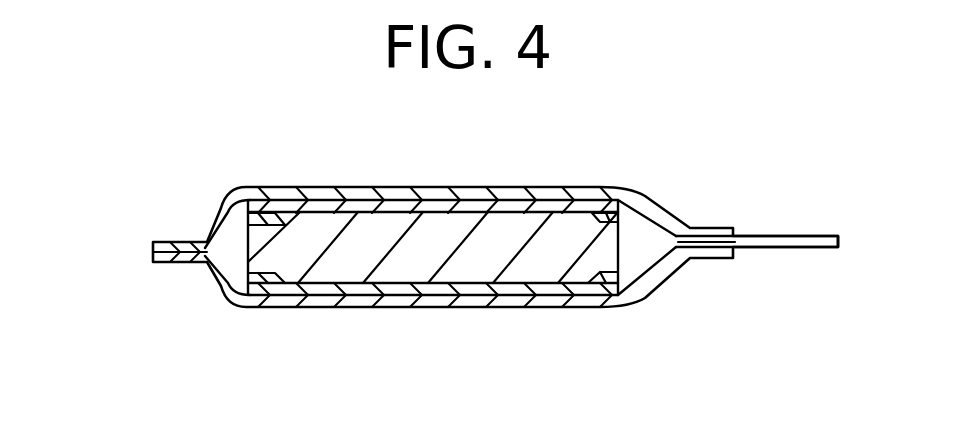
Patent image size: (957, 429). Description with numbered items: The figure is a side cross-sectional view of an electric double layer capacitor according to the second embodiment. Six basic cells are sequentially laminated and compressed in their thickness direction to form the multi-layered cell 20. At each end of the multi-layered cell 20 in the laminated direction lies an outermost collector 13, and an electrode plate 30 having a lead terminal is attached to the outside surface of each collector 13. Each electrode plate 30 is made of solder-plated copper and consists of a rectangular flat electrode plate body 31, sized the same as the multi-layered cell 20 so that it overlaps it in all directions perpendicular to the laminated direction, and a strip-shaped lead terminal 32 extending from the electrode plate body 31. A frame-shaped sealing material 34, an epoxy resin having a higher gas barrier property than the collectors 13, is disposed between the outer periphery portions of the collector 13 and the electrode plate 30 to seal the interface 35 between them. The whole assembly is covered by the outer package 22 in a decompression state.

The collector 13 is at (428, 205).
The multi-layered cell 20 is at (474, 198).
The outer package 22 is at (645, 188).
The electrode plate having a lead terminal 30 is at (347, 197).
The electrode plate body 31 is at (525, 197).
The lead terminal 32 is at (797, 250).
The sealing material 34 is at (262, 203).
The interface 35 is at (567, 196).